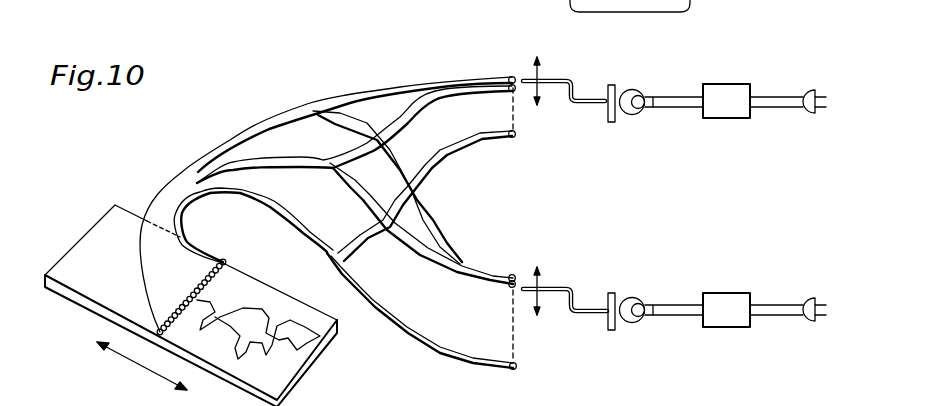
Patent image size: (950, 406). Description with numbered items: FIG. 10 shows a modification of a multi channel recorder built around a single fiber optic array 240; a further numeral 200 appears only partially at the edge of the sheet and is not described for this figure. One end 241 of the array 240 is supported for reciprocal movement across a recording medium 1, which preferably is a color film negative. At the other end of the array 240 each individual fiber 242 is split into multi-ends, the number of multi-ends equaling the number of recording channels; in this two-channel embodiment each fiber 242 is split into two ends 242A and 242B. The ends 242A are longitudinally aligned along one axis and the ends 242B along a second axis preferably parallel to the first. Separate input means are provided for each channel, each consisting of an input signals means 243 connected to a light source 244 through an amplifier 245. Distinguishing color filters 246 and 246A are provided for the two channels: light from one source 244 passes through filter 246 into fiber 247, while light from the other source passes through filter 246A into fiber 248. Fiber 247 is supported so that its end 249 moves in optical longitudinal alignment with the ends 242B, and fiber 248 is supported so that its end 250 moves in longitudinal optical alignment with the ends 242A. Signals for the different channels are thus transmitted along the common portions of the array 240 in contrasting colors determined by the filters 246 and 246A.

The recording medium 1 is at (100, 248).
The apparatus (partially shown) 200 is at (763, 401).
The fiber optic array 240 is at (328, 215).
The end of array 241 is at (212, 280).
The individual fiber 242 is at (287, 208).
The fiber ends 242A is at (414, 240).
The fiber ends 242B is at (443, 103).
The input signals means 243 is at (807, 110).
The light source 244 is at (632, 115).
The amplifier 245 is at (720, 83).
The color filter 246 is at (613, 83).
The color filter 246A is at (612, 293).
The fiber 247 is at (588, 105).
The fiber 248 is at (583, 317).
The end of fiber 247 249 is at (525, 75).
The end of fiber 248 250 is at (523, 285).